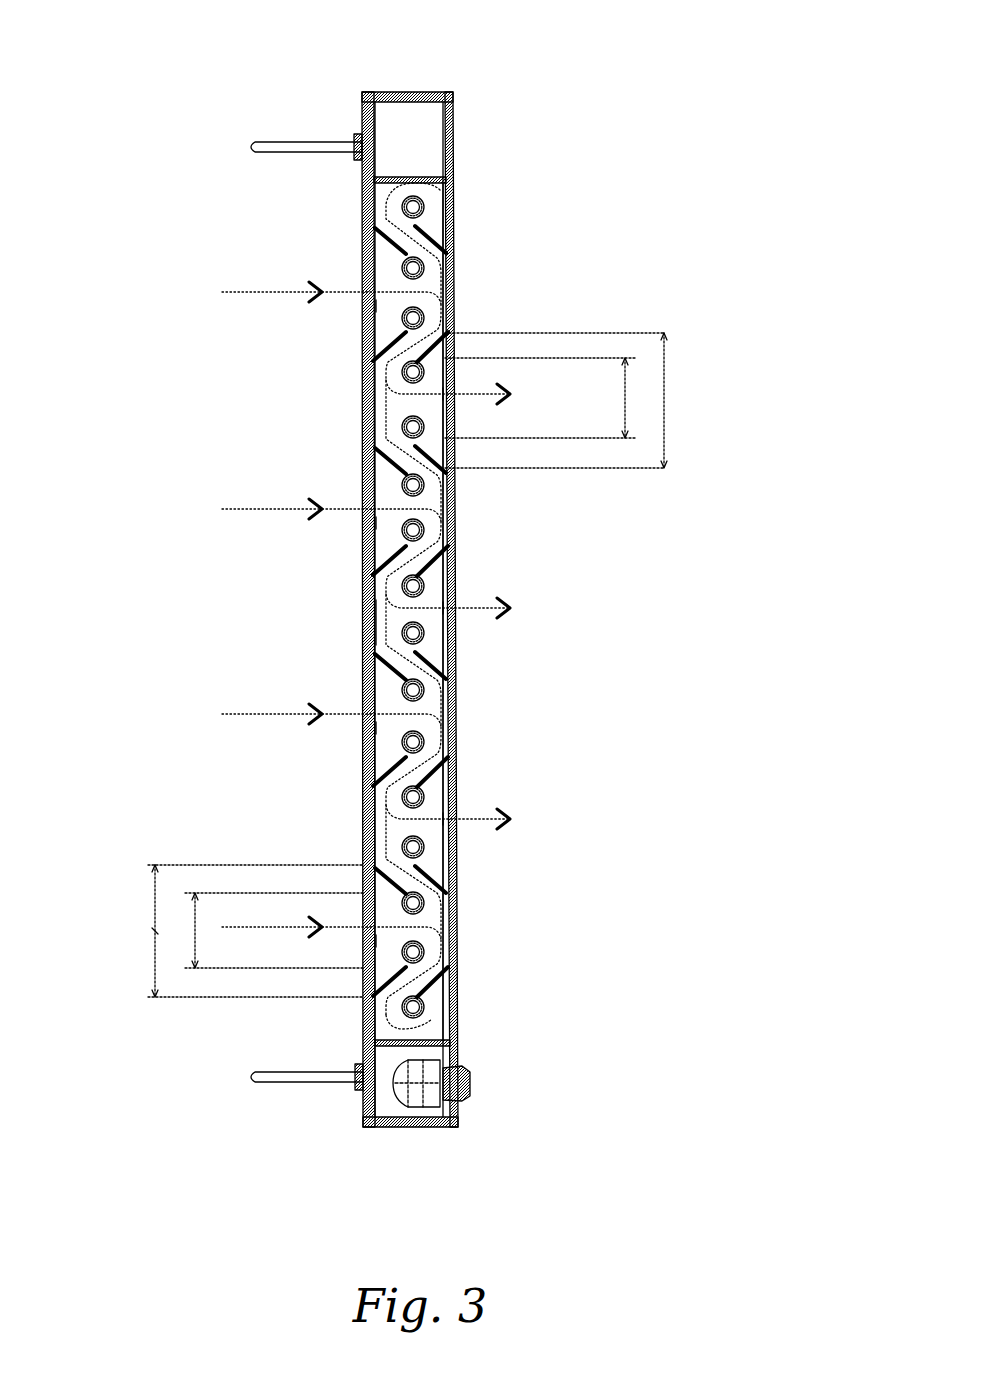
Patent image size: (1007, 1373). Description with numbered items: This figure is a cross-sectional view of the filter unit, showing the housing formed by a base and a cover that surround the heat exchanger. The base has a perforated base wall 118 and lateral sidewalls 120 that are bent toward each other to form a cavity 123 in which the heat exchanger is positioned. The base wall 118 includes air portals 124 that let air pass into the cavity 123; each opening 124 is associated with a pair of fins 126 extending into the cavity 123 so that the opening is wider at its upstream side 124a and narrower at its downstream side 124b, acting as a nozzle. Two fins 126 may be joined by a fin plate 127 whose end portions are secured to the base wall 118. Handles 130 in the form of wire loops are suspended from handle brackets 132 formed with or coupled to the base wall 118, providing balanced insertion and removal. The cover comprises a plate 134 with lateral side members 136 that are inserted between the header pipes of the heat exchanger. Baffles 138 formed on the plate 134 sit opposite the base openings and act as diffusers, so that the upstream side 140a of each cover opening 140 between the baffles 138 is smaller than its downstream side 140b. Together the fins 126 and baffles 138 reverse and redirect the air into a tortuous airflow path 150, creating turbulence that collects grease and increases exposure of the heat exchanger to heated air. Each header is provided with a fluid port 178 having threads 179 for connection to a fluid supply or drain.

The base wall 118 is at (362, 205).
The lateral sidewalls 120 is at (425, 92).
The cavity 123 is at (432, 638).
The air portals 124 is at (388, 315).
The upstream side 124a is at (157, 925).
The downstream side 124b is at (194, 932).
The fins 126 is at (378, 242).
The fin plate 127 is at (372, 622).
The handle 130 is at (250, 148).
The handle brackets 132 is at (357, 142).
The plate 134 is at (455, 1010).
The lateral side members 136 is at (418, 166).
The baffles 138 is at (438, 248).
The opening 140 is at (440, 360).
The upstream side 140a is at (627, 398).
The downstream side 140b is at (664, 388).
The tortuous airflow path 150 is at (222, 292).
The fluid port 178 is at (432, 1098).
The threads 179 is at (468, 1100).